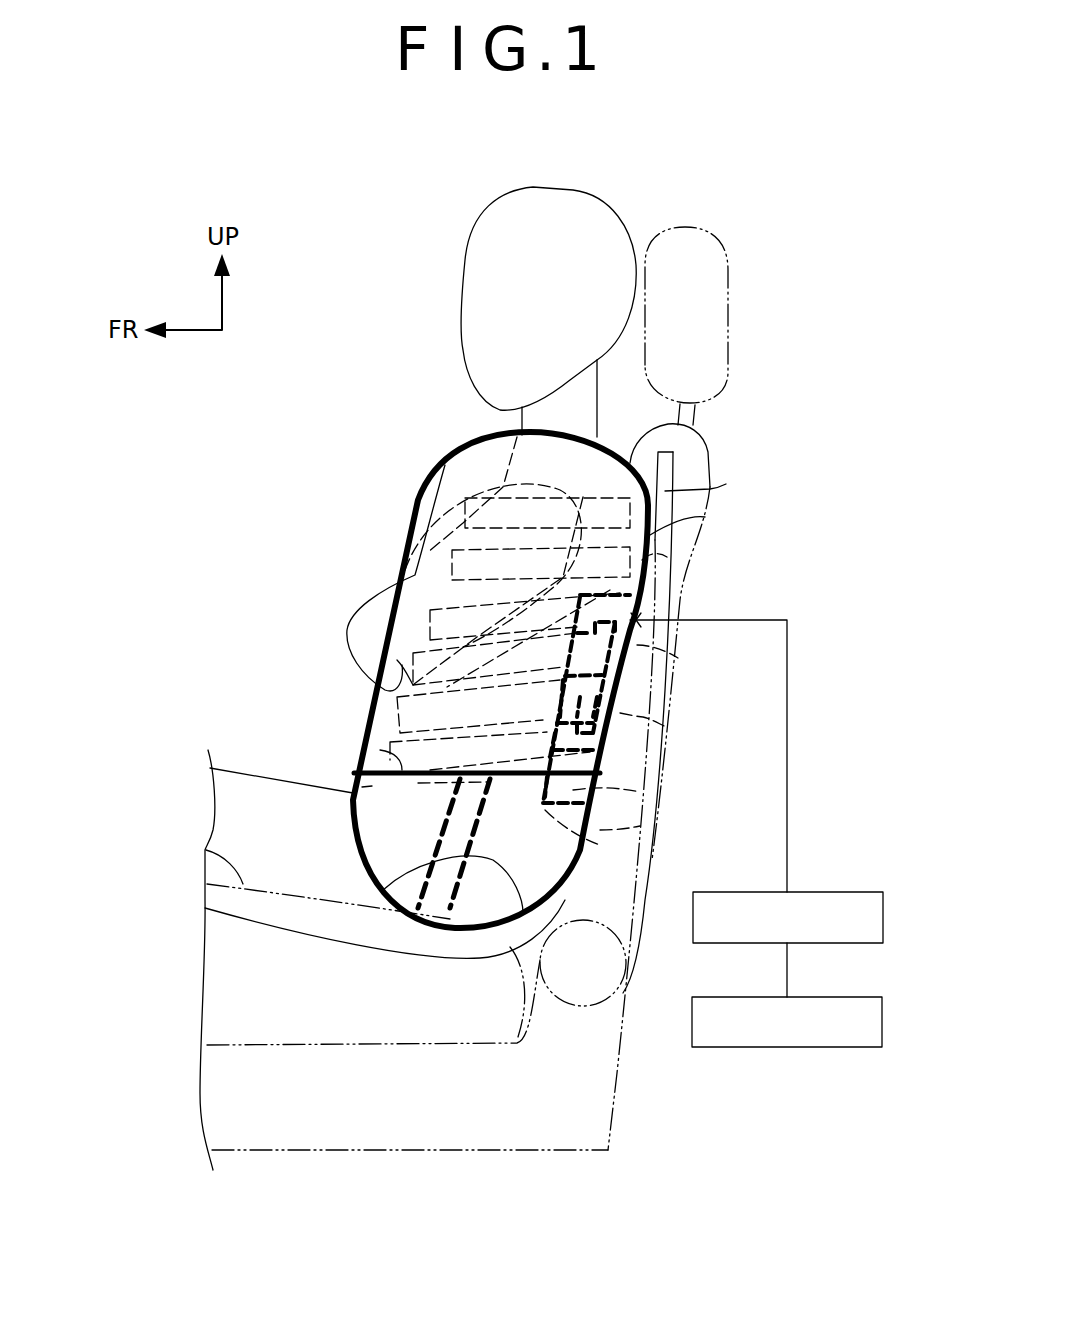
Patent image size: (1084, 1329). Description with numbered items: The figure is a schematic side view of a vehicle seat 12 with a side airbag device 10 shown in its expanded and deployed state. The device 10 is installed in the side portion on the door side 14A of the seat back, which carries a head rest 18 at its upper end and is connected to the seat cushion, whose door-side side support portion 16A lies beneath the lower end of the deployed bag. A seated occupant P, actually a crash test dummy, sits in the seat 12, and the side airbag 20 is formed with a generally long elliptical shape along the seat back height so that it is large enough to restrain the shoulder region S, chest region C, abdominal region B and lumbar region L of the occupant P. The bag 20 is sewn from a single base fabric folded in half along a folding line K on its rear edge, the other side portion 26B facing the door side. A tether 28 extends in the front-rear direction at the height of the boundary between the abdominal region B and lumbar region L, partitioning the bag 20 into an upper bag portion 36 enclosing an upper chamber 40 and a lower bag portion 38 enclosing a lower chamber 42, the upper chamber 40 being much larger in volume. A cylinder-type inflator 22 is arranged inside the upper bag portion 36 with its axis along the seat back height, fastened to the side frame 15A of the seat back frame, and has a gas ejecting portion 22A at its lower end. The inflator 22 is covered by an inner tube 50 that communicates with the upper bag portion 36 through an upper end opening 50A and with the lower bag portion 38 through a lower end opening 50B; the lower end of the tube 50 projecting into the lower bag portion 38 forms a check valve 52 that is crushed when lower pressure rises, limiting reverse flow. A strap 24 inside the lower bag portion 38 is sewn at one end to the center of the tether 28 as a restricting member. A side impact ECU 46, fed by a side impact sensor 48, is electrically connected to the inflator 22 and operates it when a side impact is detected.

The side airbag device 10 is at (352, 460).
The vehicle seat 12 is at (620, 1077).
The side portion on the door side 14A is at (707, 465).
The side frame 15A is at (726, 484).
The side support portion 16A is at (205, 849).
The head rest 18 is at (735, 327).
The side airbag 20 is at (385, 610).
The inflator 22 is at (678, 658).
The gas ejecting portion 22A is at (667, 727).
The strap 24 is at (380, 887).
The other side portion 26B is at (397, 660).
The tether 28 is at (360, 747).
The upper bag portion 36 is at (440, 510).
The lower bag portion 38 is at (387, 825).
The upper chamber 40 is at (415, 490).
The lower chamber 42 is at (383, 855).
The side impact ECU 46 is at (840, 890).
The side impact sensor 48 is at (858, 997).
The inner tube 50 is at (565, 720).
The upper end opening 50A is at (667, 557).
The lower end opening 50B is at (640, 826).
The check valve 52 is at (640, 792).
The seated occupant P is at (465, 226).
The shoulder region S is at (473, 437).
The chest region C is at (400, 543).
The abdominal region B is at (360, 705).
The folding line K is at (705, 517).
The lumbar region L is at (500, 873).